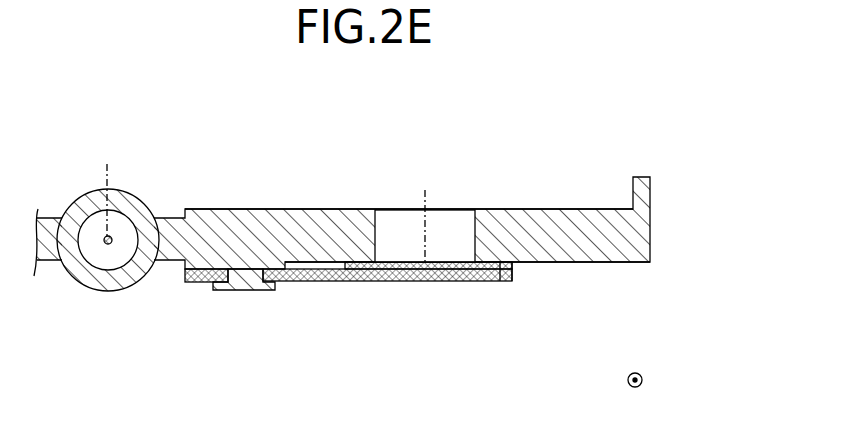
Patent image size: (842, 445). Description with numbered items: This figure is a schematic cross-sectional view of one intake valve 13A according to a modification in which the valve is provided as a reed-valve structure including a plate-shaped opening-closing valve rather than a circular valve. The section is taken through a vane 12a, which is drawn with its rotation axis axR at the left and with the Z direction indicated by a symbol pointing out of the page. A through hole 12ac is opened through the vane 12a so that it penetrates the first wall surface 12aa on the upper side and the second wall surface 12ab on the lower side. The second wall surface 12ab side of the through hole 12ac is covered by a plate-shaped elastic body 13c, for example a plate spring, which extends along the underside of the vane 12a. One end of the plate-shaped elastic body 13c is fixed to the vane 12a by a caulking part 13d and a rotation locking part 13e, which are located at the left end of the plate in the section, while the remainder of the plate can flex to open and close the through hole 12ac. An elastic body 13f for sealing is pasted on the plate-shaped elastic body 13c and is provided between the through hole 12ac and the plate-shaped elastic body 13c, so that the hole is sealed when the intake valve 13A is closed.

The vane 12a is at (606, 168).
The first wall surface 12aa is at (547, 208).
The second wall surface 12ab is at (592, 265).
The through hole 12ac is at (443, 216).
The rotation axis axR is at (109, 193).
The intake valve 13A is at (356, 334).
The plate-shaped elastic body 13c is at (373, 282).
The caulking part 13d is at (243, 300).
The rotation locking part 13e is at (190, 283).
The elastic body for sealing 13f is at (513, 269).
The Z axis direction Z is at (644, 381).